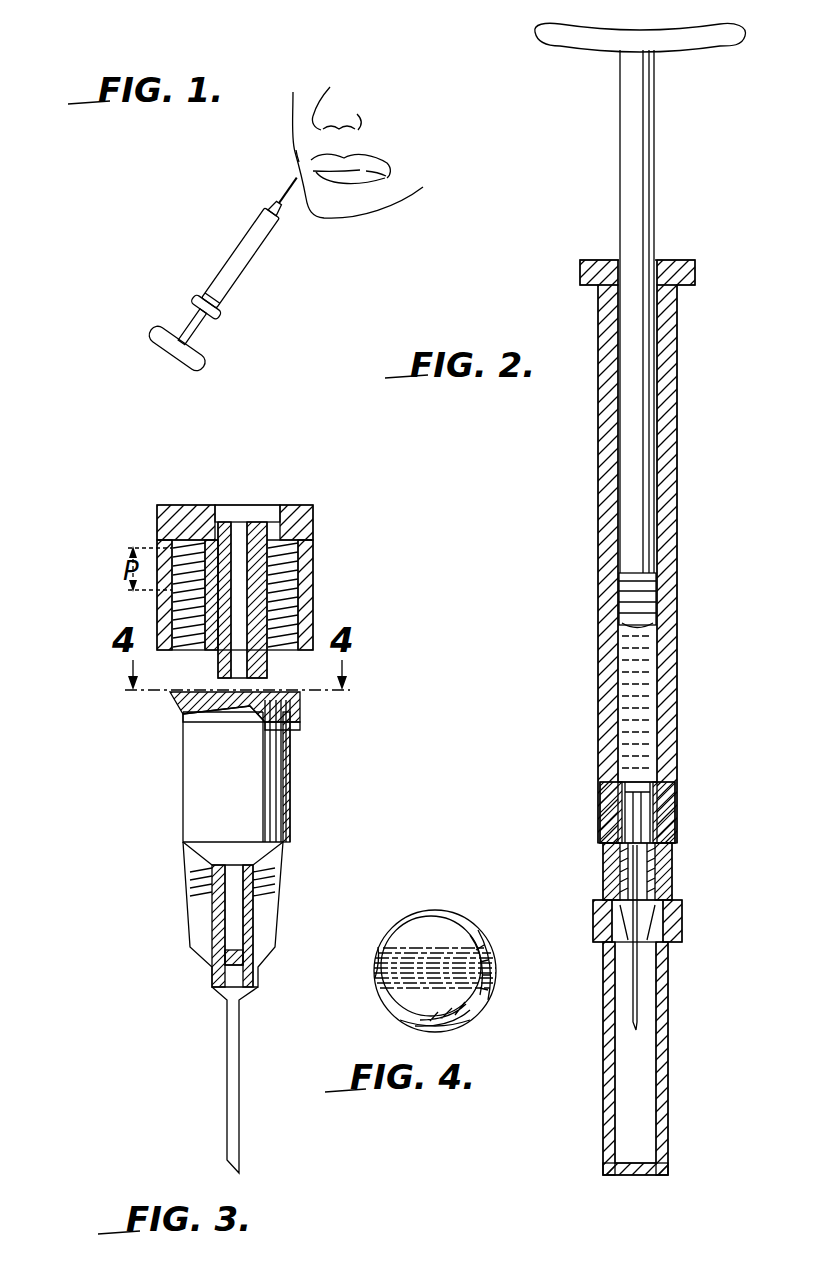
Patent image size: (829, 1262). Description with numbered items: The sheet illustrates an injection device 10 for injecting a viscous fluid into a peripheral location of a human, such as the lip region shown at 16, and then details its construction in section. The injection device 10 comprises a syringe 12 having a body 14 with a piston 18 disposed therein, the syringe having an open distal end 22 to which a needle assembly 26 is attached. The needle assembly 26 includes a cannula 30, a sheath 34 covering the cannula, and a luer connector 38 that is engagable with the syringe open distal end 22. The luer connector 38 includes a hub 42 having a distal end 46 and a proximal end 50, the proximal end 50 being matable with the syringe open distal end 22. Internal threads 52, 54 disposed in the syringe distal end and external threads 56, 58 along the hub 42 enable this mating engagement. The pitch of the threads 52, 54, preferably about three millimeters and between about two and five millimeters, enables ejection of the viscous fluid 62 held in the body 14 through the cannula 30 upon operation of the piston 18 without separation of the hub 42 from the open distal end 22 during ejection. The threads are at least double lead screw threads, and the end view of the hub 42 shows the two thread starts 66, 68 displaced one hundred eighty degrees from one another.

In FIG. 1, the injection device 10 is at (225, 273).
In FIG. 2, the injection device 10 is at (644, 433).
In FIG. 1, the syringe 12 is at (216, 272).
In FIG. 2, the syringe 12 is at (683, 608).
In FIG. 1, the body 14 is at (247, 272).
In FIG. 2, the body 14 is at (669, 506).
In FIG. 1, the injection site 16 is at (296, 154).
In FIG. 1, the piston 18 is at (205, 337).
In FIG. 2, the piston 18 is at (655, 201).
In FIG. 2, the open distal end 22 is at (672, 860).
In FIG. 3, the open distal end 22 is at (168, 652).
In FIG. 2, the needle assembly 26 is at (638, 886).
In FIG. 3, the needle assembly 26 is at (302, 772).
In FIG. 2, the cannula 30 is at (638, 1000).
In FIG. 3, the cannula 30 is at (225, 1050).
In FIG. 2, the sheath 34 is at (668, 1098).
In FIG. 3, the luer connector 38 is at (291, 818).
In FIG. 3, the hub 42 is at (185, 786).
In FIG. 3, the distal end 46 is at (252, 922).
In FIG. 3, the proximal end 50 is at (185, 705).
In FIG. 3, the internal thread 52 is at (300, 593).
In FIG. 3, the internal thread 54 is at (300, 562).
In FIG. 3, the external thread 56 is at (180, 727).
In FIG. 4, the external thread 56 is at (470, 1022).
In FIG. 3, the external thread 58 is at (288, 716).
In FIG. 4, the external thread 58 is at (430, 912).
In FIG. 2, the viscous fluid 62 is at (645, 678).
In FIG. 4, the thread start 66 is at (497, 968).
In FIG. 4, the thread start 68 is at (373, 977).